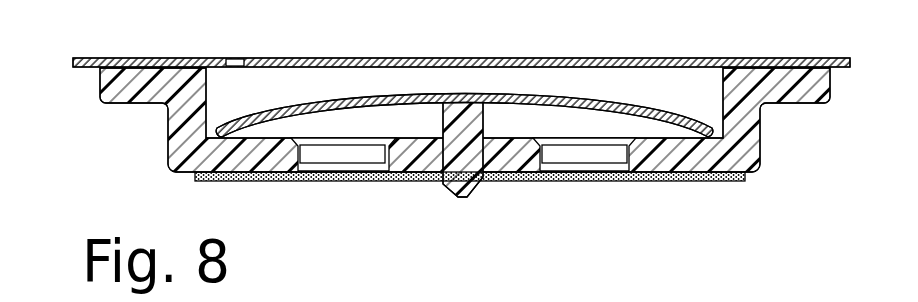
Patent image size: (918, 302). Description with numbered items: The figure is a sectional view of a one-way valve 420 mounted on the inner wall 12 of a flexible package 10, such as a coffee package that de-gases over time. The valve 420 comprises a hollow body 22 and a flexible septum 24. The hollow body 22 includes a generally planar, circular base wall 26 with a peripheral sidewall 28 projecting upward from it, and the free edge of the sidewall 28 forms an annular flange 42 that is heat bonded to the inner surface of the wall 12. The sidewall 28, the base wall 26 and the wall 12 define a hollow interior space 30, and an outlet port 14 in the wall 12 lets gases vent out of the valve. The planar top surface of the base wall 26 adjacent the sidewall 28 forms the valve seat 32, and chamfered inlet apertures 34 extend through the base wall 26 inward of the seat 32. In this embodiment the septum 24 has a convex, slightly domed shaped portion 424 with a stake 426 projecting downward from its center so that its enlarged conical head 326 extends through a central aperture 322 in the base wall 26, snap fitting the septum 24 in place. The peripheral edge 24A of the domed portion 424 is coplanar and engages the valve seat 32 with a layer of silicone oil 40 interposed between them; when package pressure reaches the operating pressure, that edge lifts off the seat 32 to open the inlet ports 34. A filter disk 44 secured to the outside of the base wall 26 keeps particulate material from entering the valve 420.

The flexible package 10 is at (479, 120).
The wall 12 is at (462, 60).
The outlet port 14 is at (234, 61).
The hollow body 22 is at (750, 100).
The septum 24 is at (539, 89).
The peripheral edge 24A is at (733, 70).
The base wall 26 is at (703, 157).
The sidewall 28 is at (187, 120).
The hollow interior space 30 is at (597, 88).
The valve seat 32 is at (658, 143).
The chamfered apertures 34 is at (333, 157).
The silicone oil 40 is at (235, 133).
The annular flange 42 is at (780, 95).
The filter disk 44 is at (193, 175).
The aperture 322 is at (492, 170).
The enlarged head 326 is at (458, 197).
The valve 420 is at (819, 142).
The dome shaped portion 424 is at (358, 92).
The stake 426 is at (428, 96).